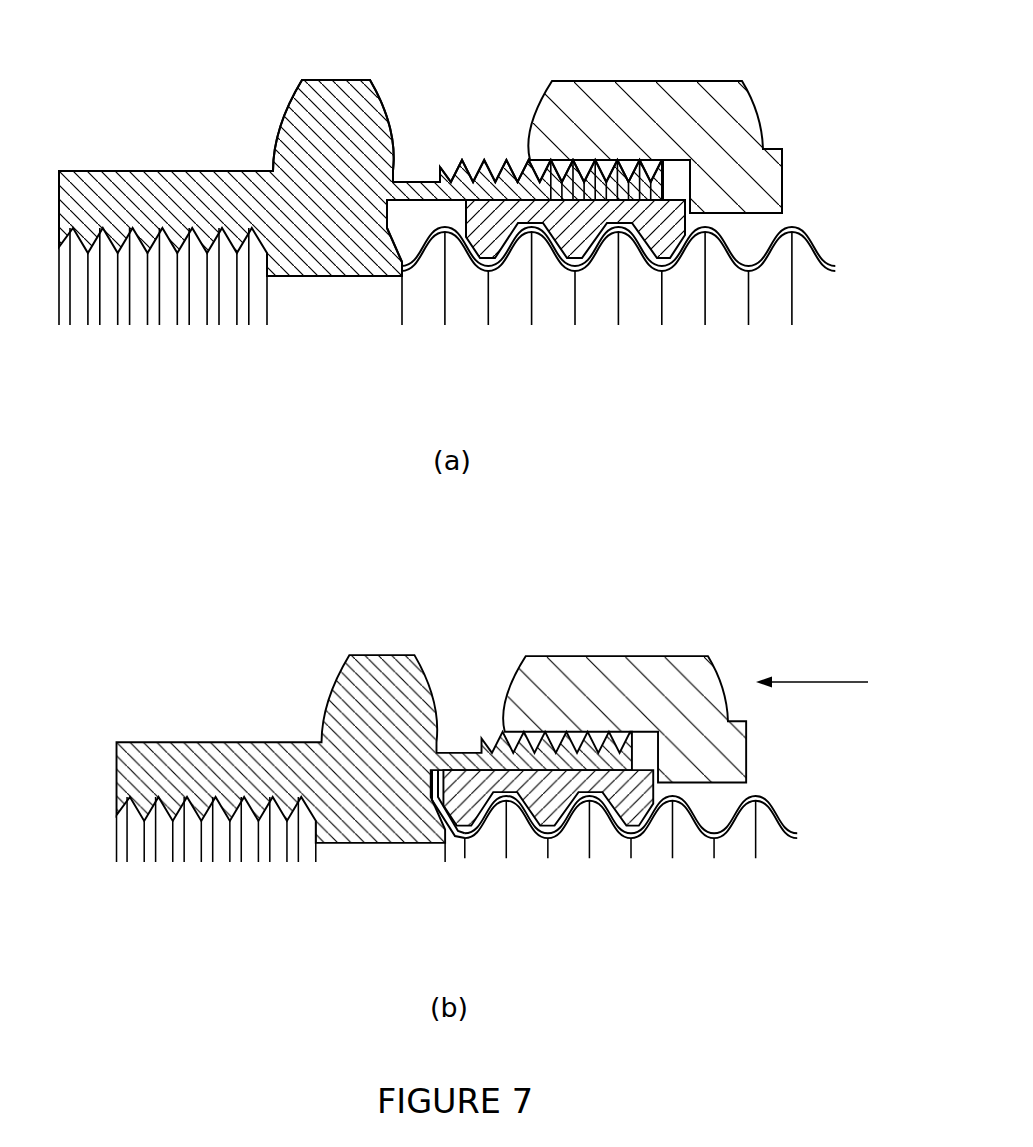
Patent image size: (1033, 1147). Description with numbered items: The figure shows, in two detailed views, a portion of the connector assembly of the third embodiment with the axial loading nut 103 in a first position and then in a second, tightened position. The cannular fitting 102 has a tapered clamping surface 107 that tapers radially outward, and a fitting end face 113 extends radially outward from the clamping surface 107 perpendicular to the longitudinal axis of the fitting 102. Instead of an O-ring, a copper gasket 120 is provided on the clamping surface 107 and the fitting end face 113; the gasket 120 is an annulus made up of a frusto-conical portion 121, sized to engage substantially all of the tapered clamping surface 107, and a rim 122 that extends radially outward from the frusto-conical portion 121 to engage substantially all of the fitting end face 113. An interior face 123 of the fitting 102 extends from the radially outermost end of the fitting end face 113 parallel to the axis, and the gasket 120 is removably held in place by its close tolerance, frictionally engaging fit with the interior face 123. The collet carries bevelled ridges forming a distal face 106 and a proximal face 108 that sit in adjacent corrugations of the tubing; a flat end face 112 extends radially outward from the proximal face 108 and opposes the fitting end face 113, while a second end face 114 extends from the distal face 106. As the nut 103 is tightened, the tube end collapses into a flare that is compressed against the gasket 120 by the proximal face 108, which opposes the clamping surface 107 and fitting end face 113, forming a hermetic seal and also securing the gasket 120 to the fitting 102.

The fitting 102 is at (150, 170).
The axial loading nut 103 is at (656, 88).
The distal face 106 is at (683, 247).
The clamping surface 107 is at (395, 246).
The proximal face 108 is at (482, 240).
The flat end face 112 is at (467, 178).
The fitting end face 113 is at (388, 212).
The second end face 114 is at (684, 221).
The copper gasket 120 is at (404, 230).
The frusto-conical portion 121 is at (447, 815).
The rim 122 is at (435, 770).
The interior face 123 is at (420, 207).